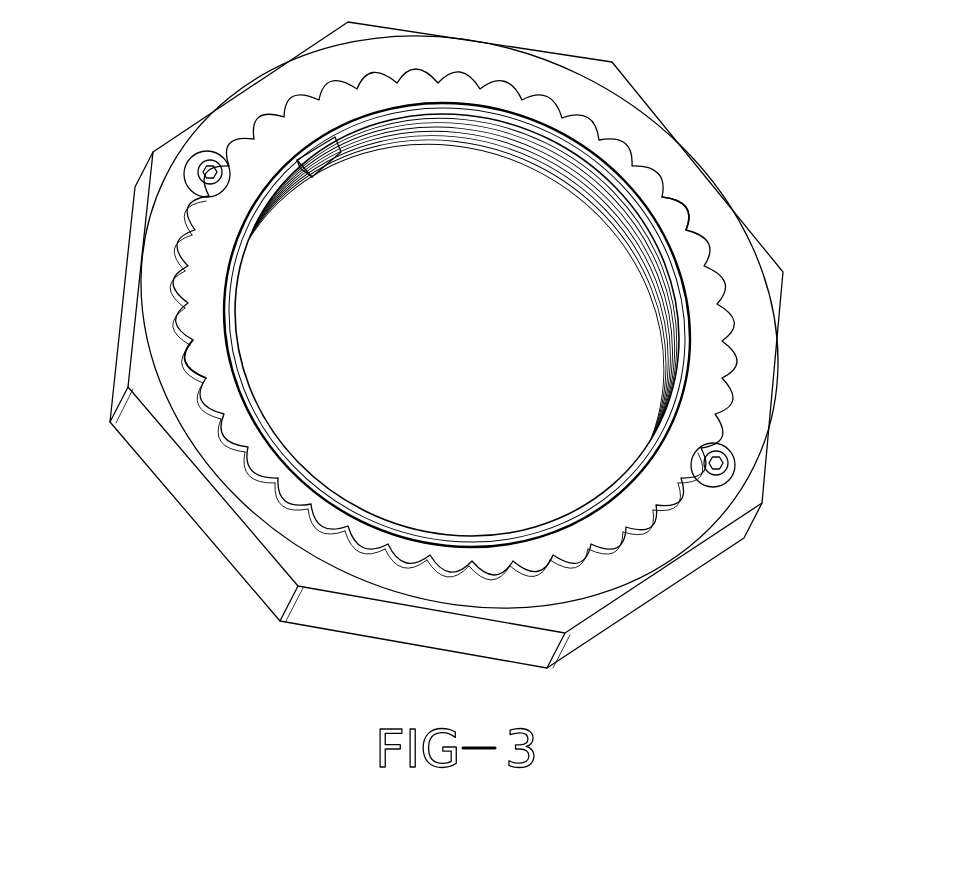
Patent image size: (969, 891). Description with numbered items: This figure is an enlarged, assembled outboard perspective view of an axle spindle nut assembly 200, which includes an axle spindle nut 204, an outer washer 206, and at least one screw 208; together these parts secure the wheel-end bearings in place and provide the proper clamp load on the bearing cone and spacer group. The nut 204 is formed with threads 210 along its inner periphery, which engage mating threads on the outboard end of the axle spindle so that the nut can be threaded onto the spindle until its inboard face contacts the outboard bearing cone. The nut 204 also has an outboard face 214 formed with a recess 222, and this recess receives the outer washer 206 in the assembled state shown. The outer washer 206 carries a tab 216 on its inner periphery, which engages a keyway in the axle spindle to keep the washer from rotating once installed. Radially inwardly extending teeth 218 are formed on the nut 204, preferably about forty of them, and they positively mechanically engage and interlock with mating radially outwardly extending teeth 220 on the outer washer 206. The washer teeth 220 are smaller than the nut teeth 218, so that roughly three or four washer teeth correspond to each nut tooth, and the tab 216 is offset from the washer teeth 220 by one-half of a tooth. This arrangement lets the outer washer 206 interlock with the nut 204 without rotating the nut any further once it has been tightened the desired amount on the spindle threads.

The axle spindle nut assembly 200 is at (123, 151).
The axle spindle nut 204 is at (226, 552).
The outer washer 206 is at (656, 169).
The screw 208 is at (196, 164).
The threads 210 is at (460, 147).
The outboard face 214 is at (752, 303).
The tab 216 is at (321, 157).
The teeth 218 is at (588, 118).
The teeth 220 is at (698, 210).
The recess 222 is at (193, 350).